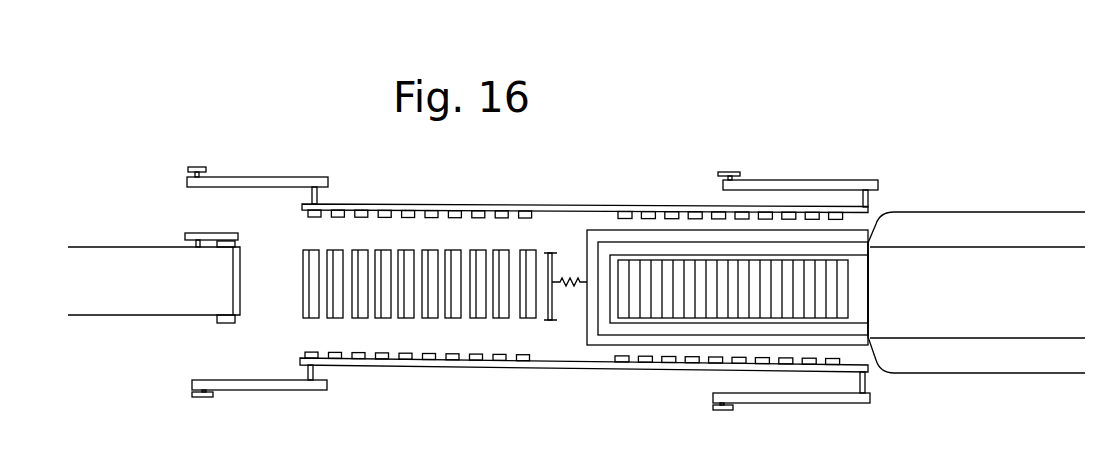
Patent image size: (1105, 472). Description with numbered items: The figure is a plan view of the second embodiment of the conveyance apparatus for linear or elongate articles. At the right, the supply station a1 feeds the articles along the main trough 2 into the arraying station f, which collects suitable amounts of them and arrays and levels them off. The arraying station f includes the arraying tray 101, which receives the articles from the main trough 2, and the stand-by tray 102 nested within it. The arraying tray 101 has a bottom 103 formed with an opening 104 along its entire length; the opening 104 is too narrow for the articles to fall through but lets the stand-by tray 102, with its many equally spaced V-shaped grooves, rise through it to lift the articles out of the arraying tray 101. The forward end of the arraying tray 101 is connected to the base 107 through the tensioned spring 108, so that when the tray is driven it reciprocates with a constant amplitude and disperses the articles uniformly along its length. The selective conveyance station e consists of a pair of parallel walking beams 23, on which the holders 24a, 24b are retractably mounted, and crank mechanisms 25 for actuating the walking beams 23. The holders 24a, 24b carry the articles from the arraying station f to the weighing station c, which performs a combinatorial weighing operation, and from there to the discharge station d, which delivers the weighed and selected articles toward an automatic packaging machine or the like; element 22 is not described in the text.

The main trough 2 is at (1027, 218).
The rod 22 is at (117, 250).
The walking beams 23 is at (570, 206).
The holders 24a is at (623, 211).
The holders 24b is at (404, 212).
The crank mechanisms 25 is at (263, 174).
The arraying tray 101 is at (583, 231).
The stand-by tray 102 is at (665, 307).
The bottom 103 is at (604, 332).
The opening 104 is at (612, 256).
The base 107 is at (548, 312).
The tensioned spring 108 is at (573, 290).
The weighing station c is at (460, 236).
The discharge station d is at (141, 321).
The selective conveyance station e is at (454, 203).
The arraying station f is at (880, 169).
The supply station a1 is at (965, 199).